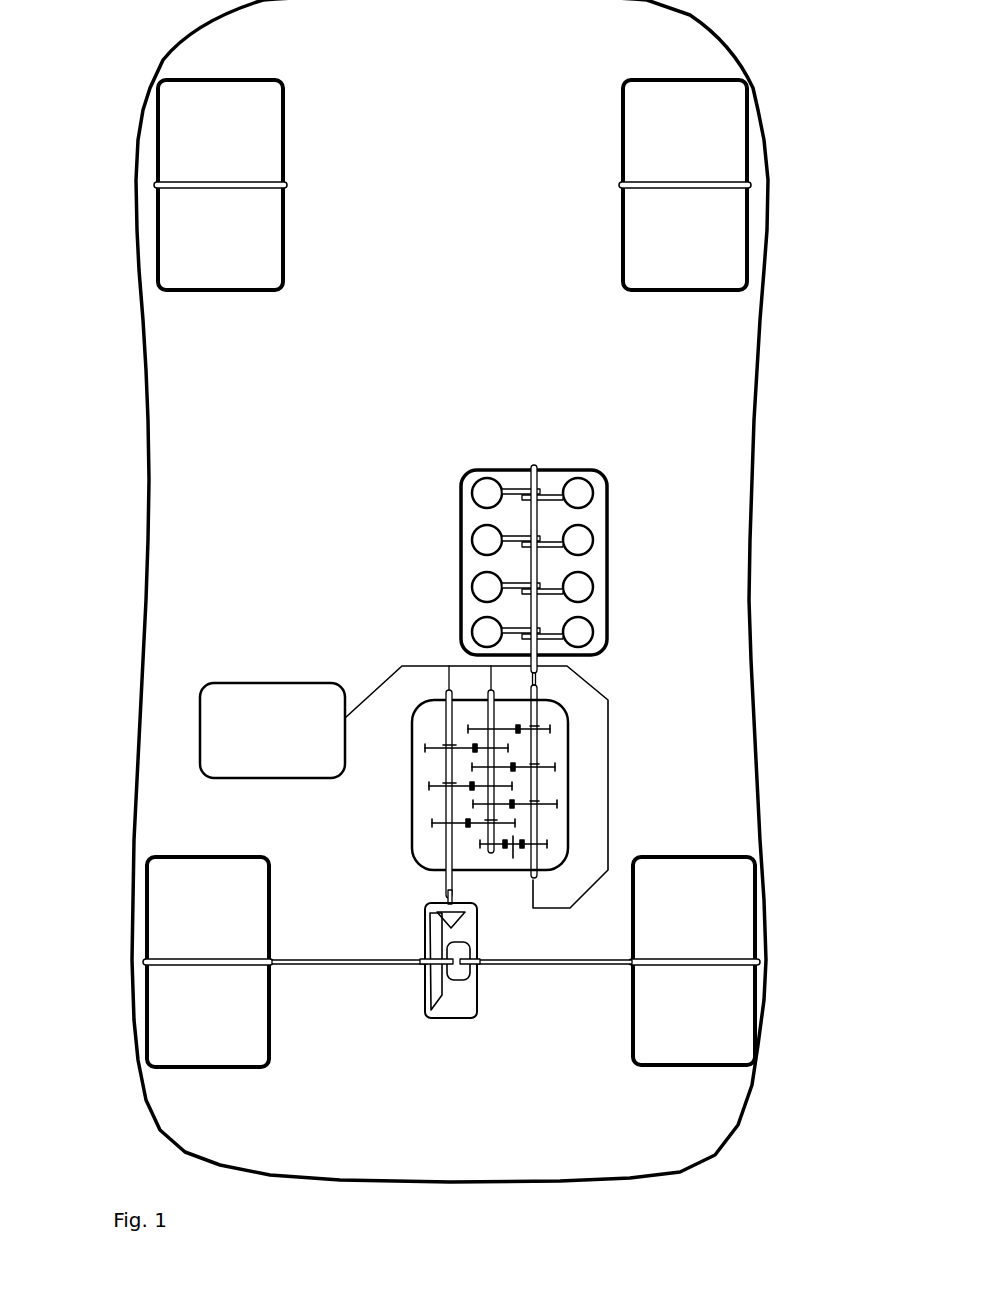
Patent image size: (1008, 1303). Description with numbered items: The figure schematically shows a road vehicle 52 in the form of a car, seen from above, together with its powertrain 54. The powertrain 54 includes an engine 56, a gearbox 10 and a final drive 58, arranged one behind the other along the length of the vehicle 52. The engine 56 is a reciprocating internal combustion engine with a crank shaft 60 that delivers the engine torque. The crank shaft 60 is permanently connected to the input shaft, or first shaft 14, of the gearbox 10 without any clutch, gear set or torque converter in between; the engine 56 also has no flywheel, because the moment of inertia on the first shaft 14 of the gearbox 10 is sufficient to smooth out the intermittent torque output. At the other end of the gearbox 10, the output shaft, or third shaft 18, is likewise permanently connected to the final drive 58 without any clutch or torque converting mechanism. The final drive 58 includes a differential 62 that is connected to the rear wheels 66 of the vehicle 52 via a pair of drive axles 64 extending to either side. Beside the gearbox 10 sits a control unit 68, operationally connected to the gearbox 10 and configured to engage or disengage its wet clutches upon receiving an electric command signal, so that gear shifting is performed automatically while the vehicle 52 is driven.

The gearbox 10 is at (405, 839).
The first shaft 14 is at (540, 688).
The third shaft 18 is at (445, 878).
The road vehicle 52 is at (800, 515).
The powertrain 54 is at (383, 634).
The engine 56 is at (455, 545).
The final drive 58 is at (476, 1003).
The crank shaft 60 is at (540, 676).
The differential 62 is at (440, 1020).
The drive axles 64 is at (340, 968).
The rear wheels 66 is at (146, 997).
The control unit 68 is at (248, 683).